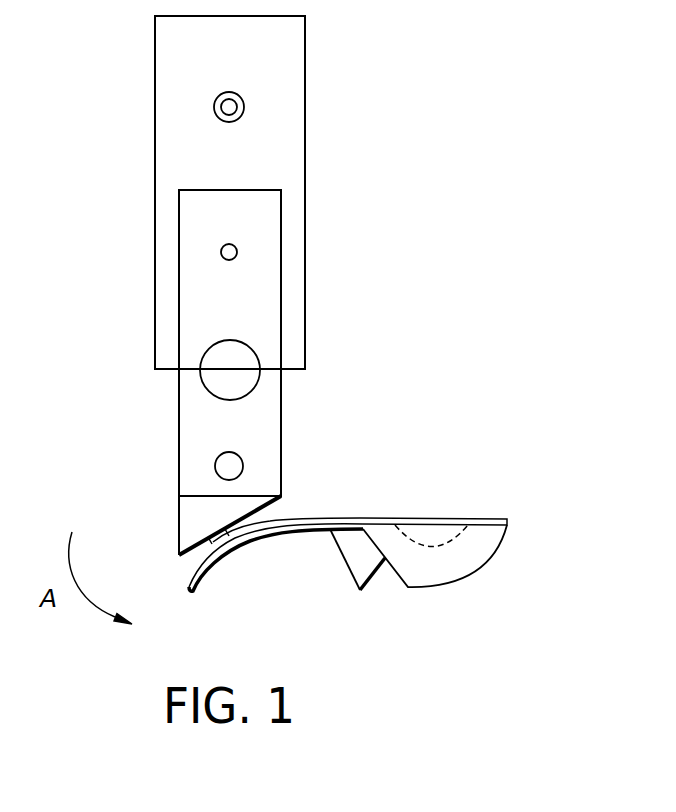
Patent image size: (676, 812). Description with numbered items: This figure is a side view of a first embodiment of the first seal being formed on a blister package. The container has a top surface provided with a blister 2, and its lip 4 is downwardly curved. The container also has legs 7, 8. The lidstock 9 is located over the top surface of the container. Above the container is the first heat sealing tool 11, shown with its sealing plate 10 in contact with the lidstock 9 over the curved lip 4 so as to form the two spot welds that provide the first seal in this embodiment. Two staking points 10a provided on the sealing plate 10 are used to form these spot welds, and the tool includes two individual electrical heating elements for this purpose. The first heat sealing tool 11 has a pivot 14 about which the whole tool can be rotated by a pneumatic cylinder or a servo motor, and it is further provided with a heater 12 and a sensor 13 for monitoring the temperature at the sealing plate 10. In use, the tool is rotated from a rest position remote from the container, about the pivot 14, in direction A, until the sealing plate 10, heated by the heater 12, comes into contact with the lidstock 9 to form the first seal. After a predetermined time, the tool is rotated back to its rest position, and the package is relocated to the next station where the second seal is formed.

The pivot 14 is at (237, 106).
The first heat sealing tool 11 is at (237, 252).
The heater 12 is at (257, 364).
The sensor 13 is at (243, 462).
The sealing plate 10 is at (197, 547).
The staking points 10a is at (245, 524).
The lip 4 is at (223, 552).
The leg 7 is at (358, 559).
The lidstock 9 is at (345, 518).
The leg 8 is at (485, 538).
The blister 2 is at (443, 527).